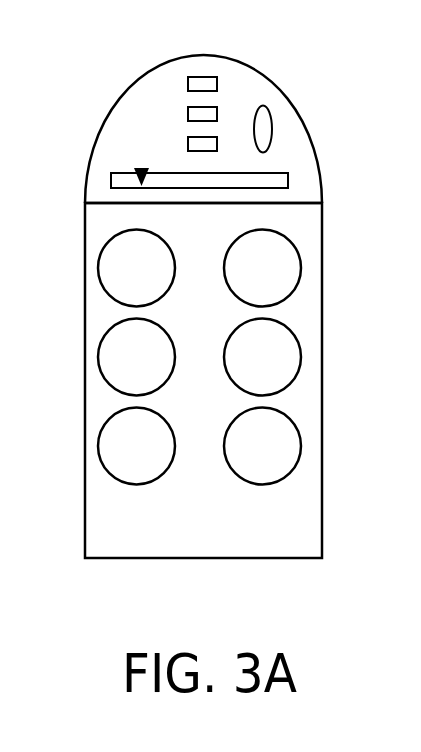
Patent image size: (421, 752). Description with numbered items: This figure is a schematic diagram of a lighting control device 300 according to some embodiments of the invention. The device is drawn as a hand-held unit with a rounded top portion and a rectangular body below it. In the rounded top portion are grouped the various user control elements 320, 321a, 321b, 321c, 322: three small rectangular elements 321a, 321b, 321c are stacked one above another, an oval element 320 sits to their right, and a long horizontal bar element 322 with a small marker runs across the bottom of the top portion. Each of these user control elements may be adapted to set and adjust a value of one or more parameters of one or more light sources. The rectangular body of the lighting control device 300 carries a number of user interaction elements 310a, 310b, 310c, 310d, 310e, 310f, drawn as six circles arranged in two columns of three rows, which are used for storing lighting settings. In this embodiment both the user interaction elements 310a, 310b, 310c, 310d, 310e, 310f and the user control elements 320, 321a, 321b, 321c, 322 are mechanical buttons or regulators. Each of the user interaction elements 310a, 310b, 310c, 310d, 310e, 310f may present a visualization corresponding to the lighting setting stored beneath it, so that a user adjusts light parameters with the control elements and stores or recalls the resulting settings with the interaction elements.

The lighting control device 300 is at (334, 504).
The user interaction element 310a is at (136, 268).
The user interaction element 310b is at (262, 268).
The user interaction element 310c is at (136, 357).
The user interaction element 310d is at (262, 357).
The user interaction element 310e is at (136, 446).
The user interaction element 310f is at (262, 446).
The user control element 320 is at (268, 120).
The user control element 321a is at (188, 84).
The user control element 321b is at (188, 114).
The user control element 321c is at (188, 143).
The user control element 322 is at (288, 178).